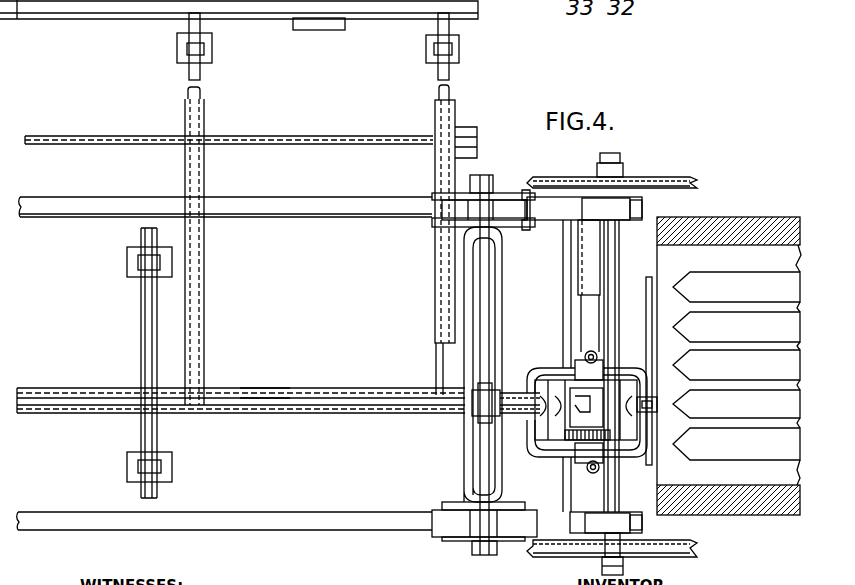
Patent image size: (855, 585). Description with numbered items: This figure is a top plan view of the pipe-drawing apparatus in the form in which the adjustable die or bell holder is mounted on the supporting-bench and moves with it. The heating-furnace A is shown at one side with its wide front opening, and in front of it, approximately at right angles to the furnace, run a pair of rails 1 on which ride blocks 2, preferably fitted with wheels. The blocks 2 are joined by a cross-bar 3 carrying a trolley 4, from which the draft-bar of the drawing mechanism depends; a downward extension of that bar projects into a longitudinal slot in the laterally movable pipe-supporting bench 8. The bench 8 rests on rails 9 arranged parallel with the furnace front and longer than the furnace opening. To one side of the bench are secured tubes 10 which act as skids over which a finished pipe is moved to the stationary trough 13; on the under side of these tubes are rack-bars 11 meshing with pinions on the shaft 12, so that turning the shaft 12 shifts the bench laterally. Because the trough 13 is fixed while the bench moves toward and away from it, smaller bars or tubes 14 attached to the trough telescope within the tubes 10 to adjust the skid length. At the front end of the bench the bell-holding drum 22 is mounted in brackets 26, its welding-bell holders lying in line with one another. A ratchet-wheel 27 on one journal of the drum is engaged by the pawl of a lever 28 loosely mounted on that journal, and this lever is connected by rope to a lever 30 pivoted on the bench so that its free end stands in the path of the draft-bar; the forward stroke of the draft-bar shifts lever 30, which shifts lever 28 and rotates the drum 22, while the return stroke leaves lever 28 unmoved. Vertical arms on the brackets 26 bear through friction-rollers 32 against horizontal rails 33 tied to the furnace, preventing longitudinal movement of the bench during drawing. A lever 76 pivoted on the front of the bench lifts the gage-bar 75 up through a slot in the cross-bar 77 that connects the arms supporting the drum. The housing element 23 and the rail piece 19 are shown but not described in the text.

The rails 1 is at (317, 207).
The blocks 2 is at (514, 192).
The cross-bar 3 is at (479, 460).
The trolley 4 is at (474, 404).
The pipe-supporting bench 8 is at (341, 390).
The rails 9 is at (140, 323).
The tubes 10 is at (205, 320).
The rack-bars 11 is at (434, 281).
The shaft 12 is at (281, 136).
The trough 13 is at (396, 14).
The bars or tubes 14 is at (201, 72).
The rail 19 is at (650, 177).
The bell-holding drum 22 is at (590, 404).
The casing 23 is at (545, 390).
The brackets 26 is at (548, 372).
The ratchet-wheel 27 is at (606, 441).
The lever 28 is at (578, 452).
The lever 30 is at (264, 394).
The friction-rollers 32 is at (600, 342).
The horizontal rails 33 is at (588, 264).
The gage-bar 75 is at (678, 372).
The lever 76 is at (647, 340).
The cross-bar 77 is at (641, 427).
The heating-furnace A is at (729, 351).